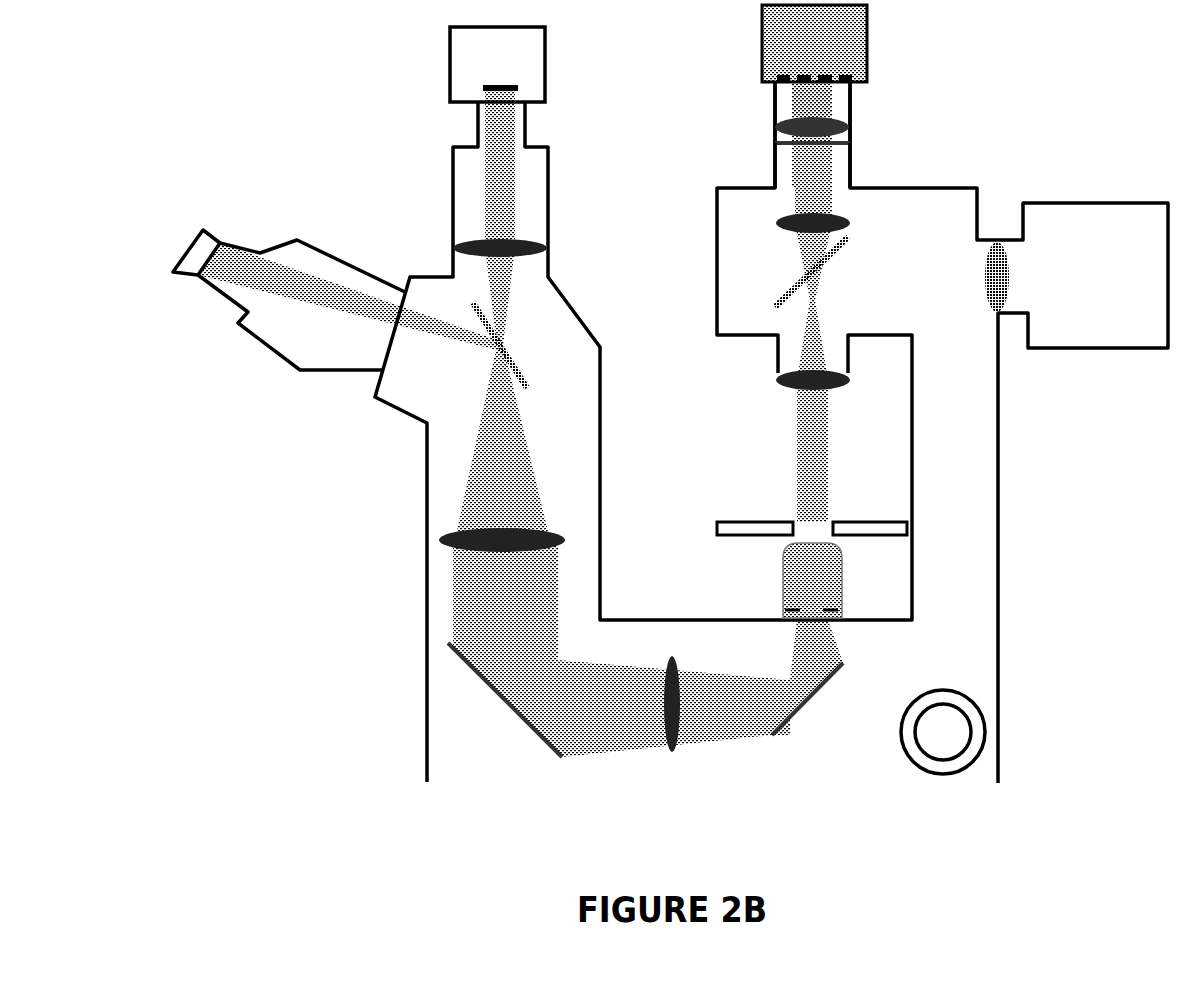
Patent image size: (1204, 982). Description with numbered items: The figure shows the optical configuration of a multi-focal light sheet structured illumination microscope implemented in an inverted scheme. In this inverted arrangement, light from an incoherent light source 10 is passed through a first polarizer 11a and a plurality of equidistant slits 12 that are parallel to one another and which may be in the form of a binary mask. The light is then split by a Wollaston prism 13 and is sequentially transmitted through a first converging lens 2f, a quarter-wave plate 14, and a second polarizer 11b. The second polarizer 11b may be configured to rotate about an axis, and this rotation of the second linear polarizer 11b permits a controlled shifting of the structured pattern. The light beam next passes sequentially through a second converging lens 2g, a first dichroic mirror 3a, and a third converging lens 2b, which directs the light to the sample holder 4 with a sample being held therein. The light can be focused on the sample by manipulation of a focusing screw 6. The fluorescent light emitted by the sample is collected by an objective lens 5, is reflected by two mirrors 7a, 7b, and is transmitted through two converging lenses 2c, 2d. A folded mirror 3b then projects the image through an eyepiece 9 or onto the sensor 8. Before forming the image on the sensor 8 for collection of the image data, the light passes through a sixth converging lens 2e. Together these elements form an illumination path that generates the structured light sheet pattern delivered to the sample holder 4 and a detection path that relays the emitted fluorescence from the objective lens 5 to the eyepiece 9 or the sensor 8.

The sensor 8 is at (507, 64).
The eyepiece 9 is at (192, 252).
The sixth converging lens 2e is at (500, 263).
The folded mirror 3b is at (506, 345).
The converging lens 2d is at (516, 549).
The mirror 7b is at (505, 700).
The converging lens 2c is at (673, 691).
The mirror 7a is at (807, 699).
The objective lens 5 is at (803, 580).
The sample holder 4 is at (801, 530).
The focusing screw 6 is at (943, 732).
The third converging lens 2b is at (824, 390).
The first dichroic mirror 3a is at (807, 272).
The second converging lens 2g is at (795, 223).
The incoherent light source 10 is at (814, 43).
The equidistant slits 12 is at (790, 80).
The first polarizer 11a is at (841, 97).
The Wollaston prism 13 is at (836, 102).
The first converging lens 2f is at (797, 128).
The quarter-wave plate 14 is at (827, 143).
The second polarizer 11b is at (791, 164).